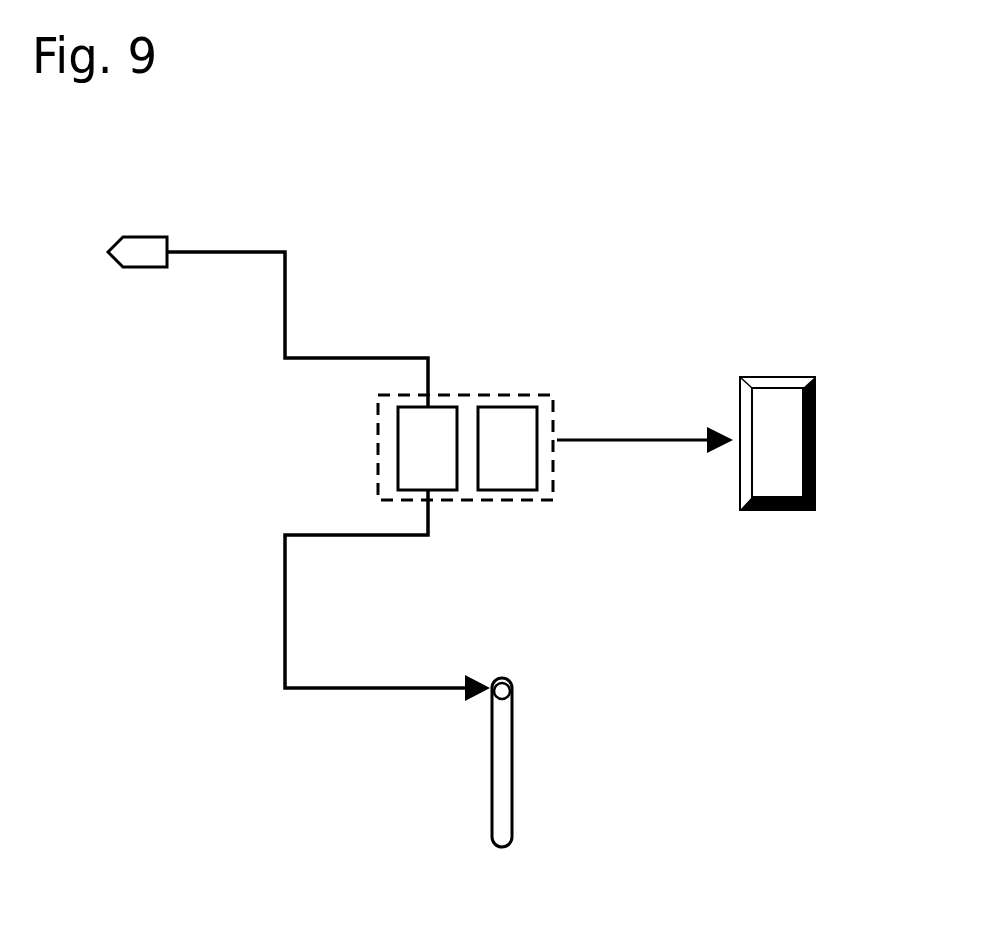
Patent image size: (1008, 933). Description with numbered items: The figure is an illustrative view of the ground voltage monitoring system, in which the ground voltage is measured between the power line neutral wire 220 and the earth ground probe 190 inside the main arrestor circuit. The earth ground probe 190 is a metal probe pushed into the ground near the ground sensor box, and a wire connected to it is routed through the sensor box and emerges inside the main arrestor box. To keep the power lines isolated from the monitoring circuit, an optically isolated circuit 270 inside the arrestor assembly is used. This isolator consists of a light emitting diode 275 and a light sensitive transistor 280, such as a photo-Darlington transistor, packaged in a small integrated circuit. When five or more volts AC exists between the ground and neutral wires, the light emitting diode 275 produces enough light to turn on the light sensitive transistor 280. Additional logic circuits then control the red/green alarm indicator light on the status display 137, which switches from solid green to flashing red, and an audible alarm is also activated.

The status display 137 is at (813, 428).
The earth ground probe 190 is at (512, 760).
The power line neutral wire 220 is at (196, 251).
The optically isolated circuit 270 is at (482, 394).
The light emitting diode 275 is at (413, 489).
The light sensitive transistor 280 is at (498, 489).